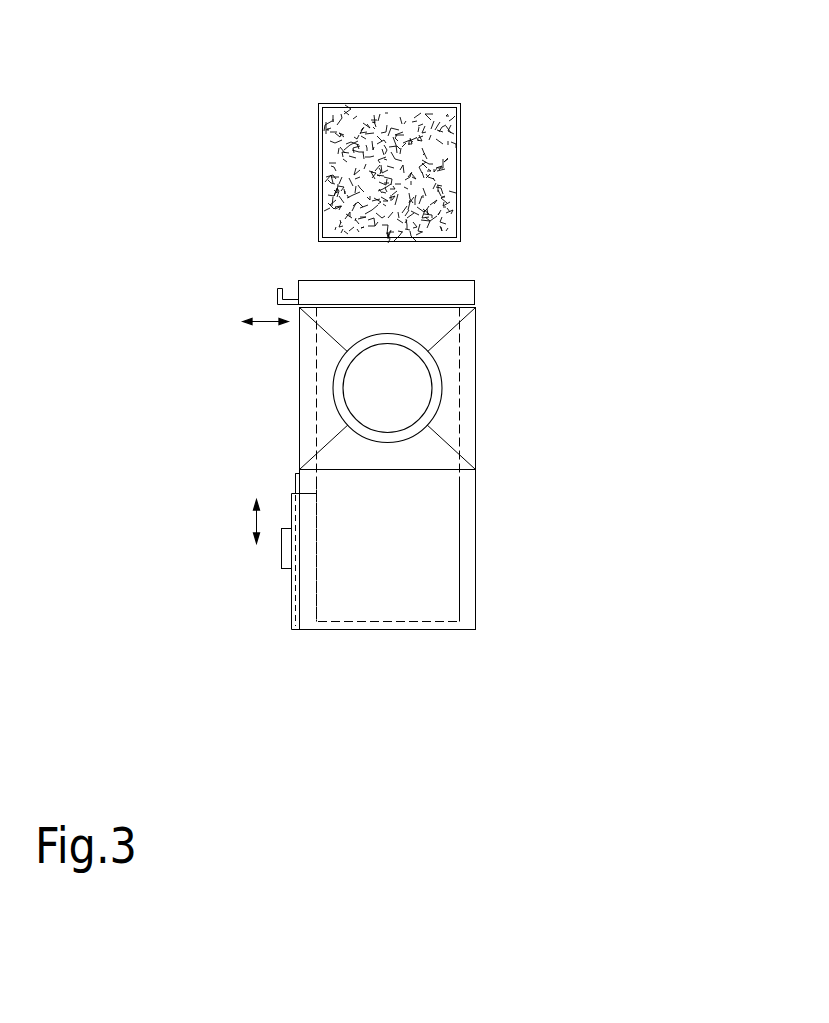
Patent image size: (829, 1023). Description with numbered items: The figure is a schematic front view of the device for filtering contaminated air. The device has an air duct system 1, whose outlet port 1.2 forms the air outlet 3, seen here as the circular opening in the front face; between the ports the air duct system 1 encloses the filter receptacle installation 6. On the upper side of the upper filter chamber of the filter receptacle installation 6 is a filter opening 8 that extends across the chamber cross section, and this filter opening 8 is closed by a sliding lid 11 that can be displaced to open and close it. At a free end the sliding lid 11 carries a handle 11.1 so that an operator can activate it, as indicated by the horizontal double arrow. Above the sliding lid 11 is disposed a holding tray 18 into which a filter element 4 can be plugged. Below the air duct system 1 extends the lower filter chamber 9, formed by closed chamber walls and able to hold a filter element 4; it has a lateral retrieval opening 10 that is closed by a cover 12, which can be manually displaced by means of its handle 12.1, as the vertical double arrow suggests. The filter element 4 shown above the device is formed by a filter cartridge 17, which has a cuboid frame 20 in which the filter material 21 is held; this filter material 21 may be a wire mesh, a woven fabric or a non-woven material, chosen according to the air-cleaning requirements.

The air duct system 1 is at (272, 382).
The outlet port 1.2 is at (448, 353).
The air outlet 3 is at (398, 400).
The filter element 4 is at (482, 165).
The filter receptacle installation 6 is at (499, 557).
The filter opening 8 is at (382, 310).
The lower filter chamber 9 is at (428, 582).
The retrieval opening 10 is at (302, 575).
The sliding lid 11 is at (341, 304).
The handle 11.1 is at (277, 299).
The cover 12 is at (290, 603).
The handle 12.1 is at (280, 553).
The filter cartridge 17 is at (432, 140).
The holding tray 18 is at (437, 293).
The cuboid frame 20 is at (382, 105).
The filter material 21 is at (345, 160).